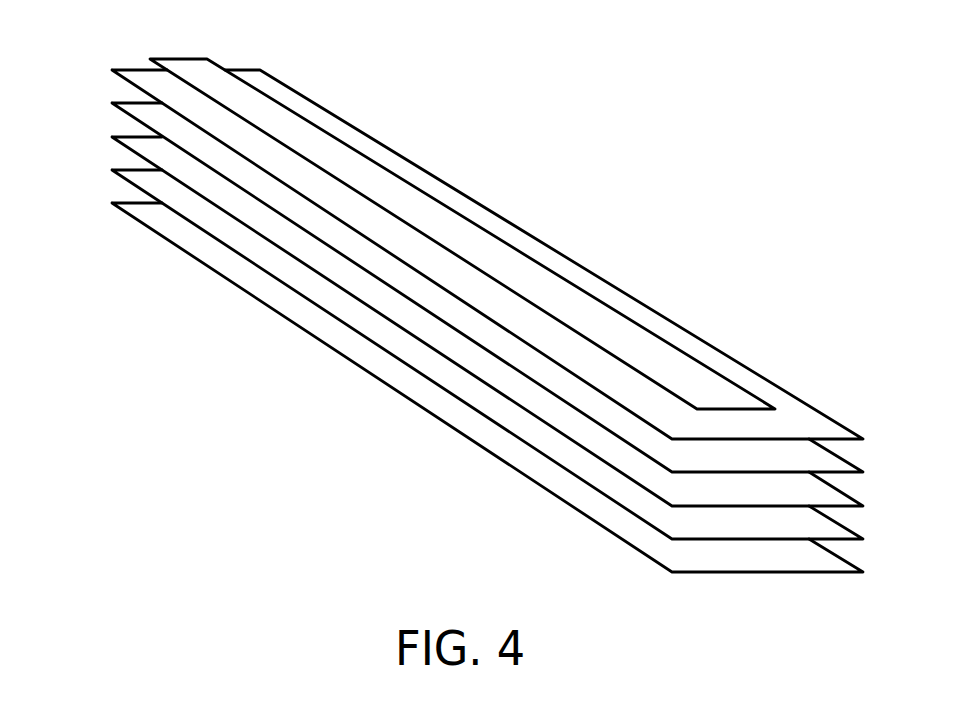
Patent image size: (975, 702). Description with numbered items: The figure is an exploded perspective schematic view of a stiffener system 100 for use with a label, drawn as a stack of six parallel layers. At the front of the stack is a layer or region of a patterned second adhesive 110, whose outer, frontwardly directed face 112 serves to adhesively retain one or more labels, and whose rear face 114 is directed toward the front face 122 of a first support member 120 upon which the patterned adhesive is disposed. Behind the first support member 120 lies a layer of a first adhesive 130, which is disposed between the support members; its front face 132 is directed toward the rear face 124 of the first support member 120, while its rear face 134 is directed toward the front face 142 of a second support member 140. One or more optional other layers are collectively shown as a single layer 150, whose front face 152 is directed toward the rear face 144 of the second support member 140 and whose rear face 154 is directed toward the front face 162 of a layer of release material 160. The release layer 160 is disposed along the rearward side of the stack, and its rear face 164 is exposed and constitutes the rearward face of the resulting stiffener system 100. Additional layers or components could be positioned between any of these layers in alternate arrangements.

The stiffener system 100 is at (471, 287).
The patterned second adhesive 110 is at (197, 63).
The outer frontwardly directed face of the patterned adhesive 112 is at (268, 112).
The rear face of the patterned adhesive 114 is at (282, 130).
The first support member 120 is at (790, 425).
The front face of the first support member 122 is at (330, 193).
The rear face of the first support member 124 is at (362, 212).
The layer of first adhesive 130 is at (822, 462).
The front face of the first adhesive layer 132 is at (587, 398).
The rear face of the first adhesive layer 134 is at (603, 412).
The second support member 140 is at (822, 495).
The front face of the second support member 142 is at (632, 465).
The rear face of the second support member 144 is at (647, 475).
The optional layer 150 is at (822, 529).
The front face of the optional layer 152 is at (680, 527).
The rear face of the optional layer 154 is at (682, 522).
The layer of release material 160 is at (822, 562).
The front face of the release layer 162 is at (745, 559).
The rear face of the release layer 164 is at (797, 562).